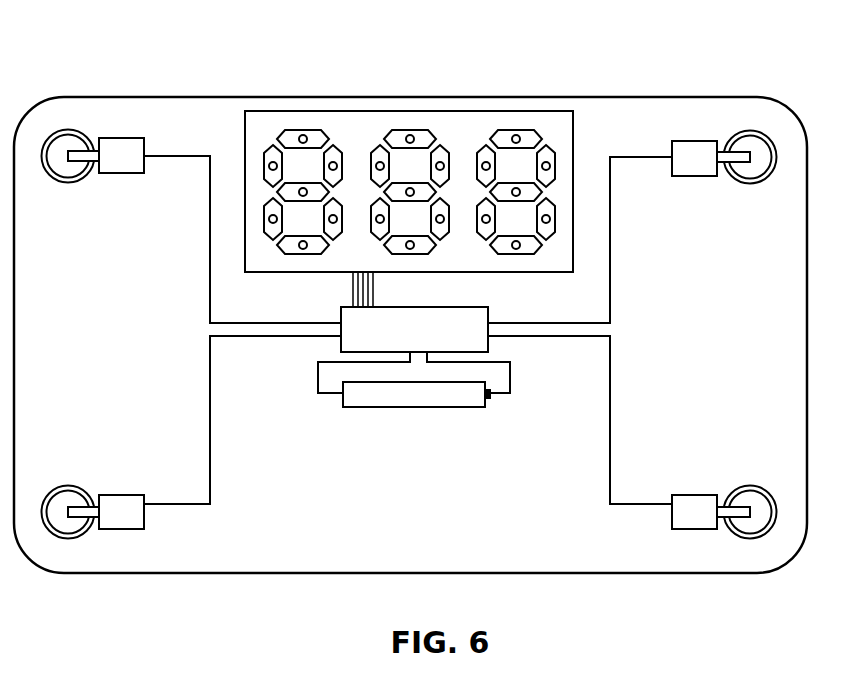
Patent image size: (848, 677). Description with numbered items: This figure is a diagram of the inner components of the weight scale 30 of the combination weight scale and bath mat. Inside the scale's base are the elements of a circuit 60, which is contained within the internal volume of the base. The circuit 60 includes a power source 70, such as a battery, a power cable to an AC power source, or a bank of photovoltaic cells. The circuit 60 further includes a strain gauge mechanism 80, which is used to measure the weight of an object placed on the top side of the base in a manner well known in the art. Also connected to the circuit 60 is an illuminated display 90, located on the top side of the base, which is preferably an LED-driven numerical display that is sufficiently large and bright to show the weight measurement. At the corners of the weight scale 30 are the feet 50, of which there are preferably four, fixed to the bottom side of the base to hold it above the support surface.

The weight scale 30 is at (675, 97).
The feet 50 is at (58, 152).
The circuit 60 is at (501, 372).
The power source 70 is at (417, 397).
The strain gauge mechanism 80 is at (120, 155).
The illuminated display 90 is at (575, 147).